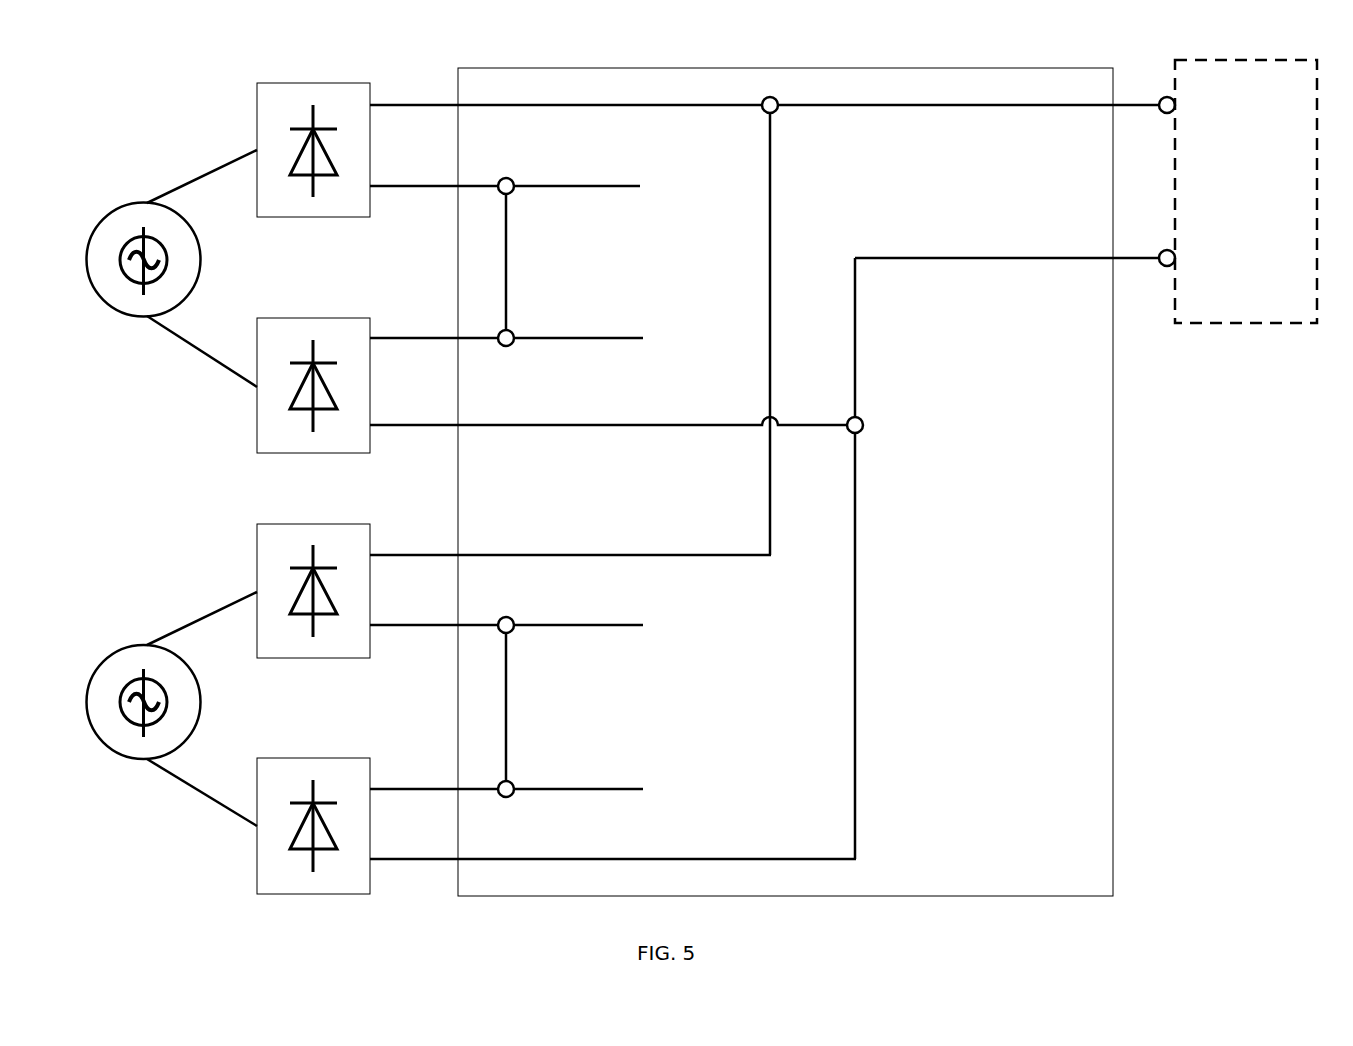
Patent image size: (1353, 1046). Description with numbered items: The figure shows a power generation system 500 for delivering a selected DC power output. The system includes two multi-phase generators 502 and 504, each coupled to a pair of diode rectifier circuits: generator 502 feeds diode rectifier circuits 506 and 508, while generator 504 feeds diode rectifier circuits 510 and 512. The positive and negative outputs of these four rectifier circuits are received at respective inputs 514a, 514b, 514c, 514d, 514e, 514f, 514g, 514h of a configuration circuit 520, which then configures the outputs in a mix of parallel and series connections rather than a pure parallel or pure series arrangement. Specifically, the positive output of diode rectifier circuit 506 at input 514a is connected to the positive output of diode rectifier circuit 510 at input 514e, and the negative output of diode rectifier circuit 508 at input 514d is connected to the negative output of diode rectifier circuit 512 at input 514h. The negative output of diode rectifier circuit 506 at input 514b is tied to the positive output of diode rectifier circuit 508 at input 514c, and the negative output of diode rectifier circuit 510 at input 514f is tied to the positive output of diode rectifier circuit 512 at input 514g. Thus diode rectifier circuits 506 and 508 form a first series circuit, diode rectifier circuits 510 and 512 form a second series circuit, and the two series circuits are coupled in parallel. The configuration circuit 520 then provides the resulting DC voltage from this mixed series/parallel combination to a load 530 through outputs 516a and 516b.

The power generation system 500 is at (168, 126).
The multi-phase generator 502 is at (183, 219).
The multi-phase generator 504 is at (183, 661).
The diode rectifier circuit 506 is at (347, 217).
The diode rectifier circuit 508 is at (335, 453).
The diode rectifier circuit 510 is at (340, 658).
The diode rectifier circuit 512 is at (290, 758).
The input of configuration circuit 514a is at (458, 104).
The input of configuration circuit 514b is at (458, 185).
The input of configuration circuit 514c is at (458, 337).
The input of configuration circuit 514d is at (458, 424).
The input of configuration circuit 514e is at (458, 554).
The input of configuration circuit 514f is at (458, 624).
The input of configuration circuit 514g is at (458, 788).
The input of configuration circuit 514h is at (458, 858).
The output of configuration circuit 516a is at (1115, 103).
The output of configuration circuit 516b is at (1110, 260).
The configuration circuit 520 is at (785, 482).
The load 530 is at (1246, 191).